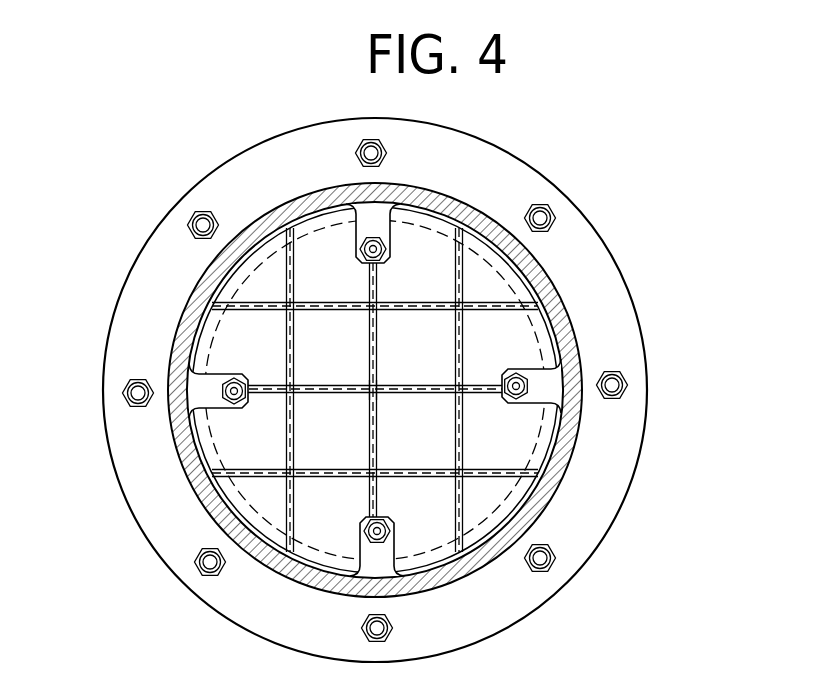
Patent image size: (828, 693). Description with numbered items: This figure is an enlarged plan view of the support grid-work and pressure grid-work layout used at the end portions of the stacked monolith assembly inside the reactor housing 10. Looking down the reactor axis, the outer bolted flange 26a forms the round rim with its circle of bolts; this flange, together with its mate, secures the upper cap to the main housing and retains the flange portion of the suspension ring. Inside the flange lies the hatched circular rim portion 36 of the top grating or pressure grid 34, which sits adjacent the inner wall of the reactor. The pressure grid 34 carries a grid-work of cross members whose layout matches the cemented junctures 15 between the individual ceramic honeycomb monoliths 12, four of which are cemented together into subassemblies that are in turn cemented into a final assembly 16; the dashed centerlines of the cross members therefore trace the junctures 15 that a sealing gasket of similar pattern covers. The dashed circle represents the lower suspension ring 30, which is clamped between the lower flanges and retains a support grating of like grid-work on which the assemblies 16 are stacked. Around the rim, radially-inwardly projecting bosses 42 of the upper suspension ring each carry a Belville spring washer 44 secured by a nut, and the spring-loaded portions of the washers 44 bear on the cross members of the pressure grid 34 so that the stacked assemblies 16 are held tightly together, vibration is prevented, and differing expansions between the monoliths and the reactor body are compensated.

The reactor housing 10 is at (568, 473).
The ceramic honeycomb monolith 12 is at (438, 328).
The cemented junctures 15 is at (418, 463).
The final assembly 16 is at (317, 335).
The flange 26a is at (578, 238).
The lower suspension ring 30 is at (208, 327).
The pressure grid 34 is at (367, 397).
The circular rim portion 36 is at (575, 327).
The boss 42 is at (363, 228).
The Belville spring washer 44 is at (363, 537).